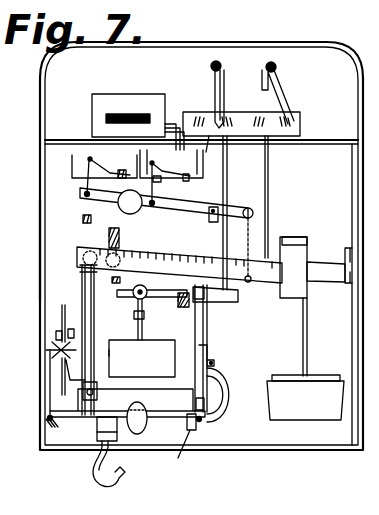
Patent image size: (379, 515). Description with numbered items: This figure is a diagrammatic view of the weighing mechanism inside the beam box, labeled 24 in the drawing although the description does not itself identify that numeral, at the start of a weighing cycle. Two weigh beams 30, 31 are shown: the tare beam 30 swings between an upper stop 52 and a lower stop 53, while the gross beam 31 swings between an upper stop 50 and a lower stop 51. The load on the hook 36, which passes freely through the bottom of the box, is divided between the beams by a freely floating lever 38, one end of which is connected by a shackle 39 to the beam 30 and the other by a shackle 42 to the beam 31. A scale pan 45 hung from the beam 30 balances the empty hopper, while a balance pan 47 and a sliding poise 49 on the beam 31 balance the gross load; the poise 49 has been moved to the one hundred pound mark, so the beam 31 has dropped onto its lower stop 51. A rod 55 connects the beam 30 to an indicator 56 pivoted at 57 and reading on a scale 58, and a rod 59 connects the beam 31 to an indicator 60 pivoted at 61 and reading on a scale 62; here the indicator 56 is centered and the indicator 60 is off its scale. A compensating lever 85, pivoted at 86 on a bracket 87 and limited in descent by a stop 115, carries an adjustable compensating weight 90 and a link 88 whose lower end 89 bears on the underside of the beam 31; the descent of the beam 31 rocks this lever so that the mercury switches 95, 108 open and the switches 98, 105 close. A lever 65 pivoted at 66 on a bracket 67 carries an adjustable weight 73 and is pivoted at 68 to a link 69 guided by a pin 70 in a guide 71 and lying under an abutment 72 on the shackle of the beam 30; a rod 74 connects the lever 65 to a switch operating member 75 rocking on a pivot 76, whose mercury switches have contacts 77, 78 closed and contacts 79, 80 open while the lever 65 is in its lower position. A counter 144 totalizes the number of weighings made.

The counter 144 is at (128, 115).
The pivot 57 is at (211, 67).
The indicator 56 is at (214, 95).
The pivot 61 is at (276, 66).
The indicator 60 is at (290, 95).
The scale 62 is at (300, 130).
The scale 58 is at (213, 150).
The mercury switch 95 is at (94, 157).
The mercury switch 98 is at (124, 166).
The mercury switch 108 is at (171, 178).
The mercury switch 105 is at (170, 185).
The pivot 86 is at (210, 204).
The rod 55 is at (228, 182).
The rod 59 is at (268, 190).
The link 88 is at (253, 224).
The upper stop 50 is at (346, 234).
The stop 115 is at (82, 218).
The compensating weight 90 is at (124, 209).
The compensating lever 85 is at (190, 216).
The bracket 87 is at (209, 221).
The weigh beam 31 is at (320, 264).
The housing 24 is at (40, 250).
The upper stop 52 is at (111, 280).
The shackle 42 is at (82, 296).
The contact 79 is at (58, 330).
The contact 80 is at (72, 328).
The switch operating member 75 is at (50, 348).
The lower stop 53 is at (125, 318).
The shackle 39 is at (194, 322).
The abutment 72 is at (207, 355).
The pin 70 is at (214, 360).
The guide 71 is at (215, 364).
The link 69 is at (226, 385).
The contact 78 is at (80, 368).
The scale pan 45 is at (142, 358).
The lower end 89 is at (250, 282).
The sliding poise 49 is at (293, 267).
The weigh beam 30 is at (236, 300).
The lower stop 51 is at (350, 284).
The balance pan 47 is at (305, 397).
The contact 77 is at (73, 377).
The rod 74 is at (50, 393).
The pivot 76 is at (77, 396).
The floating lever 38 is at (127, 403).
The lever 65 is at (150, 418).
The pivot connection 68 is at (202, 420).
The pivot 66 is at (192, 432).
The bracket 67 is at (187, 451).
The weight 73 is at (137, 434).
The hook 36 is at (98, 468).